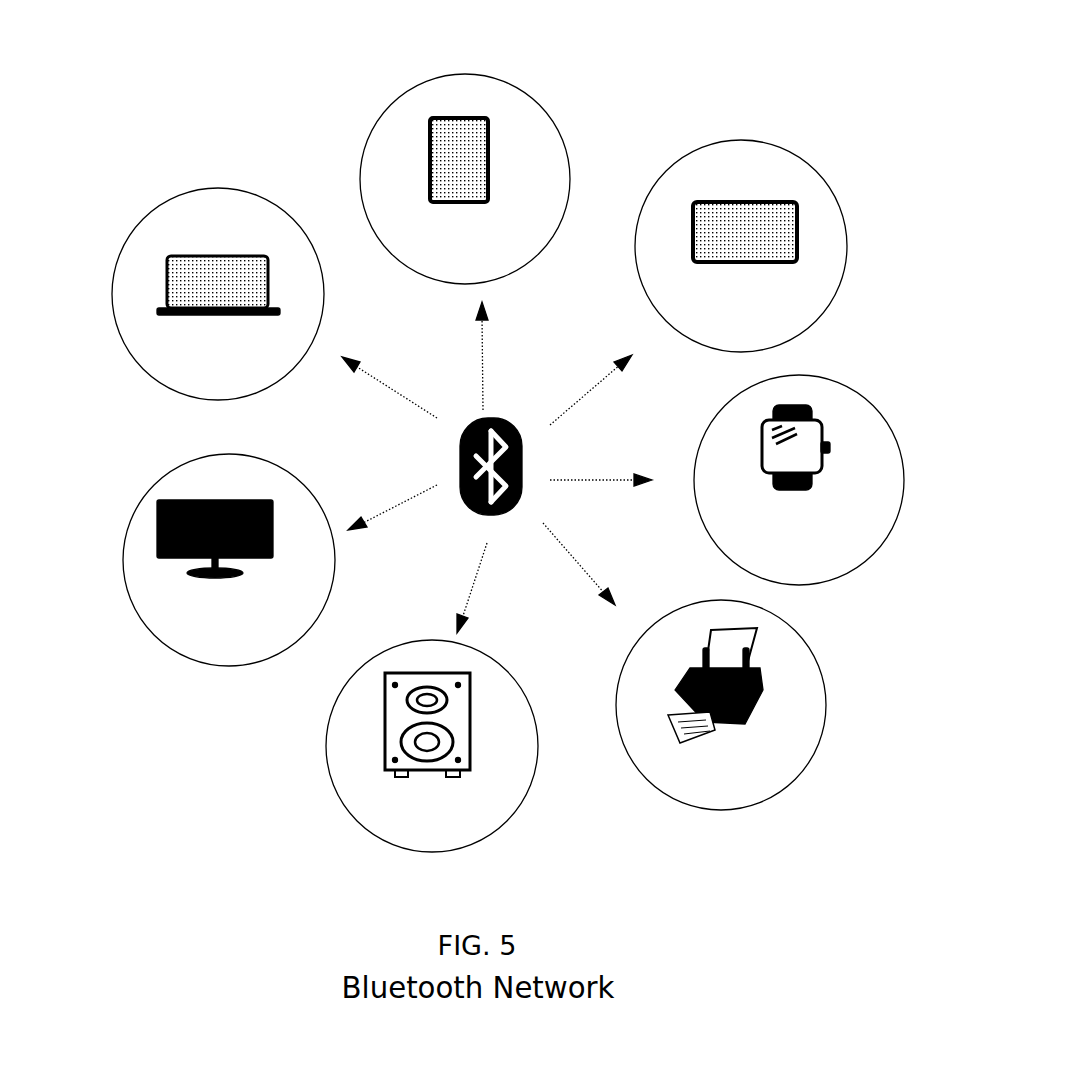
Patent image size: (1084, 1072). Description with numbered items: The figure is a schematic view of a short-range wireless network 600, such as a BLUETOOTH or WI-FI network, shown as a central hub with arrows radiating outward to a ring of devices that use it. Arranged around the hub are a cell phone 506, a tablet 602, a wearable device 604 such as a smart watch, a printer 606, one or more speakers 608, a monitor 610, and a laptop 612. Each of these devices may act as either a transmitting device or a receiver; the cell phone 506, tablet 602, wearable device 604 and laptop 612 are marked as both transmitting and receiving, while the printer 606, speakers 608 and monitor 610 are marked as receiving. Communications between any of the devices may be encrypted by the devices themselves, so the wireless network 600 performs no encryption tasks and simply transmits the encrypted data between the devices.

The cell phone 506 is at (520, 75).
The wireless network 600 is at (677, 103).
The tablet 602 is at (800, 160).
The wearable device 604 is at (905, 443).
The printer 606 is at (828, 712).
The speaker 608 is at (337, 798).
The monitor 610 is at (138, 615).
The laptop 612 is at (113, 330).